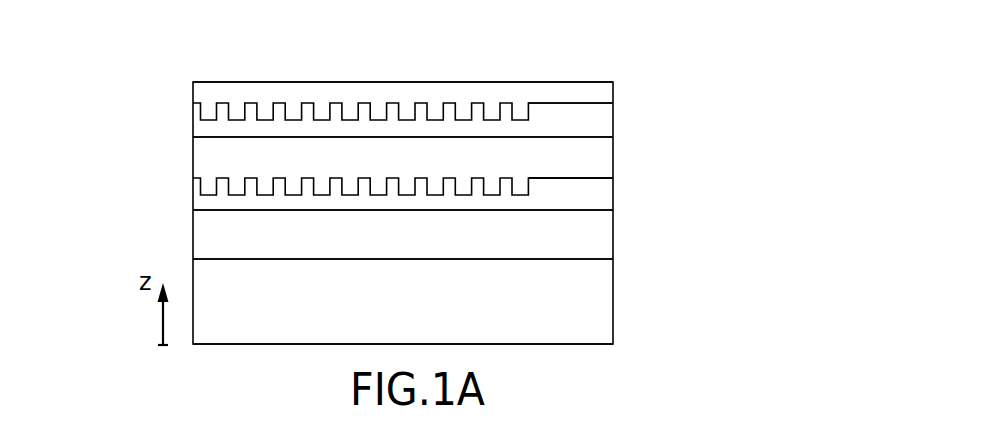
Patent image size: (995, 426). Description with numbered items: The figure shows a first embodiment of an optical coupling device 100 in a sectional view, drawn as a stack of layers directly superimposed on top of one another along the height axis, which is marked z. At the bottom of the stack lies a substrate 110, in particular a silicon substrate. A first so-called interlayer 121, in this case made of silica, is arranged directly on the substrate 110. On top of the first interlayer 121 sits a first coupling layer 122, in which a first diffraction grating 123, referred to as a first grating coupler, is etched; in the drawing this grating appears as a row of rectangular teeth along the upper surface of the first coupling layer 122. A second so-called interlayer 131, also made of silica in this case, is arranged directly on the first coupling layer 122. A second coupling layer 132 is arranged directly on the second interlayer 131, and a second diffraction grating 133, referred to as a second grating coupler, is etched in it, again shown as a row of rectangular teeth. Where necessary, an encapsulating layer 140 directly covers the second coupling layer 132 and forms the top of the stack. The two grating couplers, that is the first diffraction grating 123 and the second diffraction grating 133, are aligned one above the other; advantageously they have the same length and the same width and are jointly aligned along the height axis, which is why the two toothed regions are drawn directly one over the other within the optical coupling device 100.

The optical coupling device 100 is at (557, 62).
The substrate 110 is at (603, 317).
The first interlayer 121 is at (603, 238).
The first coupling layer 122 is at (603, 196).
The first diffraction grating 123 is at (227, 170).
The second interlayer 131 is at (603, 158).
The second coupling layer 132 is at (603, 122).
The second diffraction grating 133 is at (227, 97).
The encapsulating layer 140 is at (603, 90).